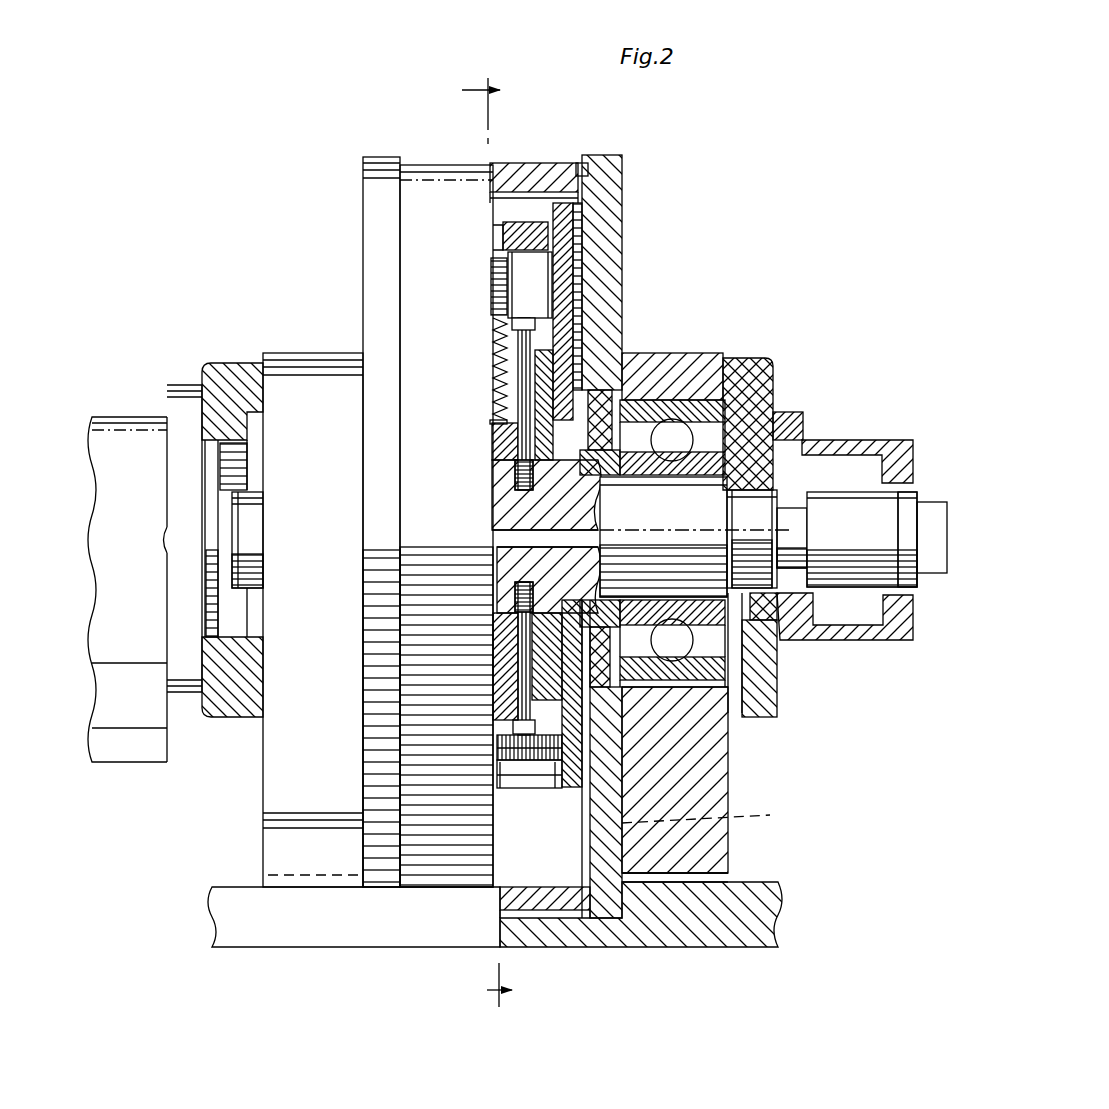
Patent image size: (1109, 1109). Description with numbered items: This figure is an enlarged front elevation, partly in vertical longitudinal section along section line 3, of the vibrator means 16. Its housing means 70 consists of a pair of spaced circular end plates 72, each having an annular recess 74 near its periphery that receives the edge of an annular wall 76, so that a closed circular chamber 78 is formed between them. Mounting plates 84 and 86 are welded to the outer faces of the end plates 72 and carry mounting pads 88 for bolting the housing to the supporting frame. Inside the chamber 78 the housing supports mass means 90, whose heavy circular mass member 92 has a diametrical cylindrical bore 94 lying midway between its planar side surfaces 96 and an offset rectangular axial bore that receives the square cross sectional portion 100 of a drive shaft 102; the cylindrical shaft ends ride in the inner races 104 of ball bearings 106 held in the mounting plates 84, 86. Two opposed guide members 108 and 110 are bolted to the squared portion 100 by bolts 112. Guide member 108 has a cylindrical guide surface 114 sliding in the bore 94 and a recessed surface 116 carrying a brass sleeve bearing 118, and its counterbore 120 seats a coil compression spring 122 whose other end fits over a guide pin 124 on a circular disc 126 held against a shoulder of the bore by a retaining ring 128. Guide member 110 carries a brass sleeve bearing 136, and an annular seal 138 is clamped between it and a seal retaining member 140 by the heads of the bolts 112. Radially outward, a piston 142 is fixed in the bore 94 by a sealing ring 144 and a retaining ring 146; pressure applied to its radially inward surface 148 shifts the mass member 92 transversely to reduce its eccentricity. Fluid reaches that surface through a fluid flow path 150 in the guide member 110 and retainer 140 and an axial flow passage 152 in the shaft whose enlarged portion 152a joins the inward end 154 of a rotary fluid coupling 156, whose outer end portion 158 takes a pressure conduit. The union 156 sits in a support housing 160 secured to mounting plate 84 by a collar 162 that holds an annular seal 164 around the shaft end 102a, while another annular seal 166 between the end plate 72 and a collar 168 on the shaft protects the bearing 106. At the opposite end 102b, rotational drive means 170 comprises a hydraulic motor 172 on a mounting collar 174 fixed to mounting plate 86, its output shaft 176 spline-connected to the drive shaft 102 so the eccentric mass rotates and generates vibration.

The section line 3 is at (477, 542).
The vibrator means 16 is at (307, 268).
The housing means 70 is at (627, 235).
The end plates 72 is at (372, 203).
The annular recess 74 is at (577, 178).
The annular wall 76 is at (520, 167).
The circular chamber 78 is at (568, 870).
The mounting plate 84 is at (670, 362).
The mounting plate 86 is at (292, 373).
The mounting pads 88 is at (280, 846).
The mass means 90 is at (570, 800).
The mass member 92 is at (565, 300).
The cylindrical bore 94 is at (553, 287).
The side surfaces 96 is at (578, 318).
The square cross sectional portion 100 is at (505, 498).
The drive shaft 102 is at (778, 470).
The outer end of drive shaft 102a is at (760, 578).
The end of drive shaft 102b is at (250, 592).
The inner races 104 is at (740, 403).
The antifriction ball bearings 106 is at (726, 404).
The guide member 108 is at (490, 445).
The guide member 110 is at (548, 640).
The bolts 112 is at (500, 390).
The cylindrical peripheral guide surface 114 is at (560, 285).
The recessed peripheral surface 116 is at (490, 415).
The brass sleeve bearing 118 is at (560, 363).
The counterbore 120 is at (490, 377).
The coil compression spring 122 is at (490, 350).
The guide pin 124 is at (490, 277).
The circular disc 126 is at (522, 232).
The retaining ring 128 is at (537, 178).
The brass sleeve bearing 136 is at (555, 660).
The annular seal 138 is at (622, 742).
The seal retaining member 140 is at (510, 725).
The piston 142 is at (558, 760).
The sealing ring 144 is at (508, 760).
The retaining ring 146 is at (562, 792).
The radially inward surface 148 is at (505, 742).
The fluid flow path 150 is at (497, 563).
The axial flow passage 152 is at (604, 519).
The enlarged diameter portion 152a is at (787, 480).
The inward end 154 is at (790, 537).
The rotary fluid coupling 156 is at (900, 567).
The outer end portion 158 is at (947, 512).
The support housing 160 is at (847, 642).
The collar 162 is at (768, 707).
The annular seal 164 is at (808, 445).
The annular seal 166 is at (622, 690).
The annular collar 168 is at (604, 477).
The rotational drive means 170 is at (138, 396).
The hydraulic motor 172 is at (103, 432).
The mounting collar 174 is at (227, 718).
The output shaft 176 is at (225, 533).